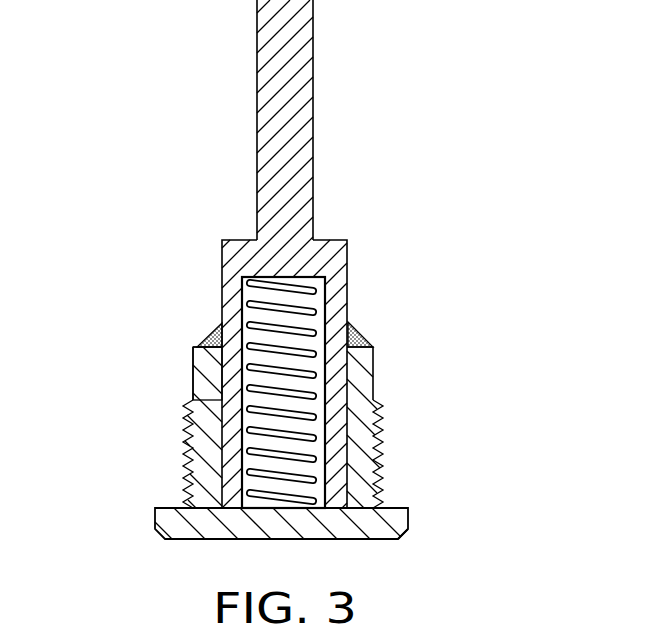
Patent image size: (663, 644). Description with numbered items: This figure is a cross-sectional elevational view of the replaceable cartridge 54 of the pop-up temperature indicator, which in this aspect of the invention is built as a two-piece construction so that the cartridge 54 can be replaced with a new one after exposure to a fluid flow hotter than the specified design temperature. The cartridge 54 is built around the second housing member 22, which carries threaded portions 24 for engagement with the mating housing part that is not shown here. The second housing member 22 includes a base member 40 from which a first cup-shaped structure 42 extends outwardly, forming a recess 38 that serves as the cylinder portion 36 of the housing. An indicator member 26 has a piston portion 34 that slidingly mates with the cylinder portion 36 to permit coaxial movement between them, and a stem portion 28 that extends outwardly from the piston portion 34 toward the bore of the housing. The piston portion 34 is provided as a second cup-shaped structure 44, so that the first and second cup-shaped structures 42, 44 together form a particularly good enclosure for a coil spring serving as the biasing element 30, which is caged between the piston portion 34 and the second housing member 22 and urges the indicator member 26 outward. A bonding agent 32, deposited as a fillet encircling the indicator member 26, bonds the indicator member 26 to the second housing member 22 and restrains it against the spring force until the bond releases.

The second housing member 22 is at (188, 540).
The threaded portions 24 is at (376, 446).
The indicator member 26 is at (382, 255).
The stem portion 28 is at (300, 58).
The biasing element 30 is at (300, 492).
The bonding agent 32 is at (353, 336).
The piston portion 34 is at (337, 285).
The cylinder portion 36 is at (205, 458).
The recess 38 is at (315, 385).
The base member 40 is at (382, 540).
The first cup-shaped structure 42 is at (368, 412).
The second cup-shaped structure 44 is at (232, 372).
The cartridge 54 is at (126, 404).